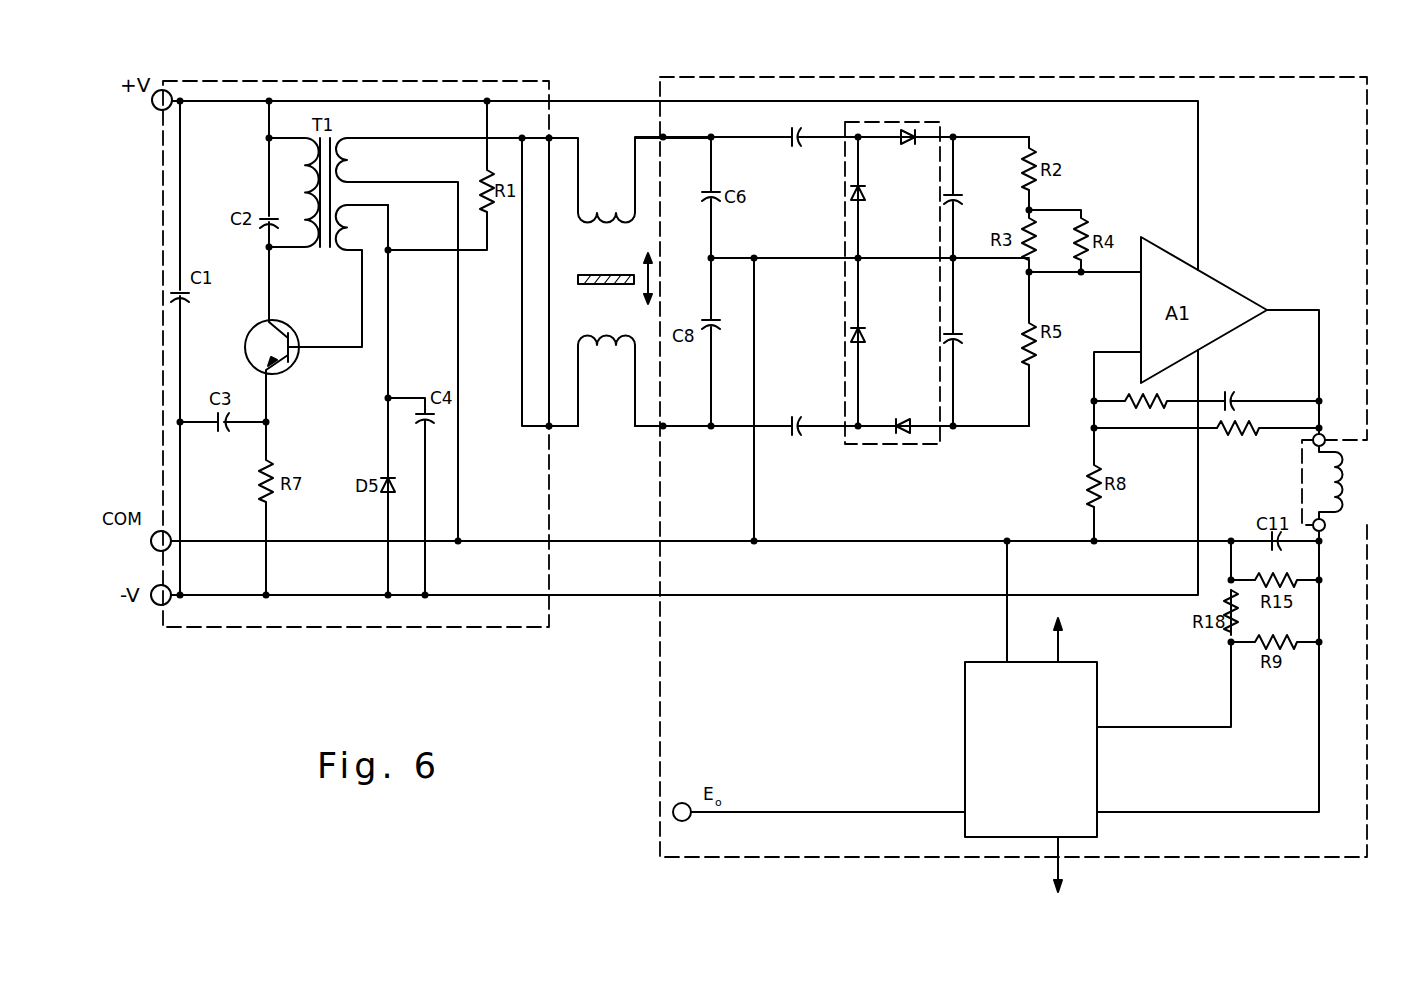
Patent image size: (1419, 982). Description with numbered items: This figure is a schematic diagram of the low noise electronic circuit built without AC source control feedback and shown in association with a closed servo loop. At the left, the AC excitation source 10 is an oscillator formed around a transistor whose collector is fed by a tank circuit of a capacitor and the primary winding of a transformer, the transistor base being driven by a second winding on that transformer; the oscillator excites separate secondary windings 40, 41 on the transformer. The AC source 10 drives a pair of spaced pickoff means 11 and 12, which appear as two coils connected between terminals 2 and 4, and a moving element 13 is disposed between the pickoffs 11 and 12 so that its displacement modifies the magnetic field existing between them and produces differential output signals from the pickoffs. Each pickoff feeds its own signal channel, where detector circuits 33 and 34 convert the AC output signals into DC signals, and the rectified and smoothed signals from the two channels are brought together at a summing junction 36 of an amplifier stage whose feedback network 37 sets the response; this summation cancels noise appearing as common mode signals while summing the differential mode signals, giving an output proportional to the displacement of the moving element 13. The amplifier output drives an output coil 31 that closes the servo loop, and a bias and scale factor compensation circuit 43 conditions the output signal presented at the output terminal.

The first terminal 2 is at (663, 137).
The second terminal 4 is at (663, 426).
The AC excitation source 10 is at (258, 307).
The pickoff means 11 is at (604, 209).
The pickoff means 12 is at (621, 357).
The moving element 13 is at (623, 286).
The output coil 31 is at (1341, 482).
The first rectifier network 33 is at (824, 168).
The second rectifier network 34 is at (840, 412).
The summing junction 36 is at (1038, 278).
The feedback network 37 is at (1207, 445).
The transformer secondary winding 40 is at (350, 160).
The transformer feedback winding 41 is at (344, 255).
The bias and scale factor compensation circuit 43 is at (1099, 799).